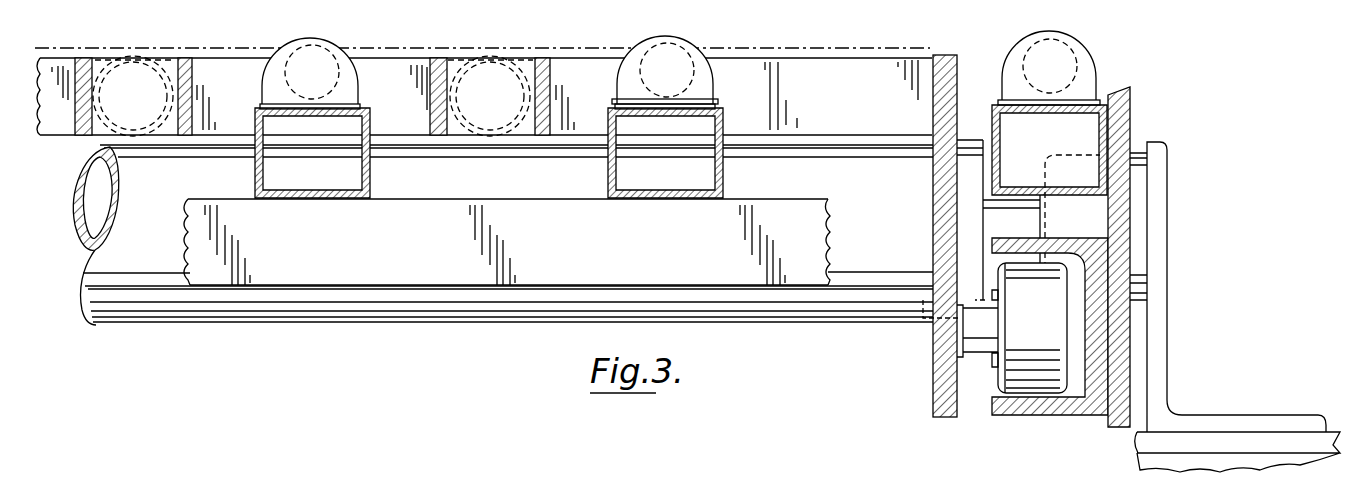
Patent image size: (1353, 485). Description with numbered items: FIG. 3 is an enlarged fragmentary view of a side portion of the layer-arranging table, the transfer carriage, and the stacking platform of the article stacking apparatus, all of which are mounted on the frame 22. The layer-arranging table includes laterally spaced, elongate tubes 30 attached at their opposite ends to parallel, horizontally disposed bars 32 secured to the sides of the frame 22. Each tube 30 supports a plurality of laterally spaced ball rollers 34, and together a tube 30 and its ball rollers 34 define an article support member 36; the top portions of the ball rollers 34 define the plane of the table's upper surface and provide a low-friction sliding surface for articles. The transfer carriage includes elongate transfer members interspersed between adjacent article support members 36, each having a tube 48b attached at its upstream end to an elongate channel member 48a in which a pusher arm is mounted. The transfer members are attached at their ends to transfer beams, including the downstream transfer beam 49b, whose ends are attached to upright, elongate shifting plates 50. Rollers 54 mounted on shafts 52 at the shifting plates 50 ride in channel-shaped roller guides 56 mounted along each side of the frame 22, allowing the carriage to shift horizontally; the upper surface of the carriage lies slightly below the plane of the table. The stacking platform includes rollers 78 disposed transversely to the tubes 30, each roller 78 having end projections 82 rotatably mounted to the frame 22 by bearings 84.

The frame 22 is at (1157, 343).
The tube 30 is at (372, 118).
The bar 32 is at (770, 200).
The ball roller 34 is at (312, 40).
The article support member 36 is at (722, 100).
The channel member 48a is at (194, 94).
The tube 48b is at (158, 55).
The downstream transfer beam 49b is at (845, 60).
The shifting plate 50 is at (935, 386).
The shaft 52 is at (985, 348).
The roller 54 is at (1034, 372).
The roller guide 56 is at (1090, 406).
The roller 78 is at (565, 316).
The end projection 82 is at (1018, 218).
The bearing 84 is at (1072, 210).